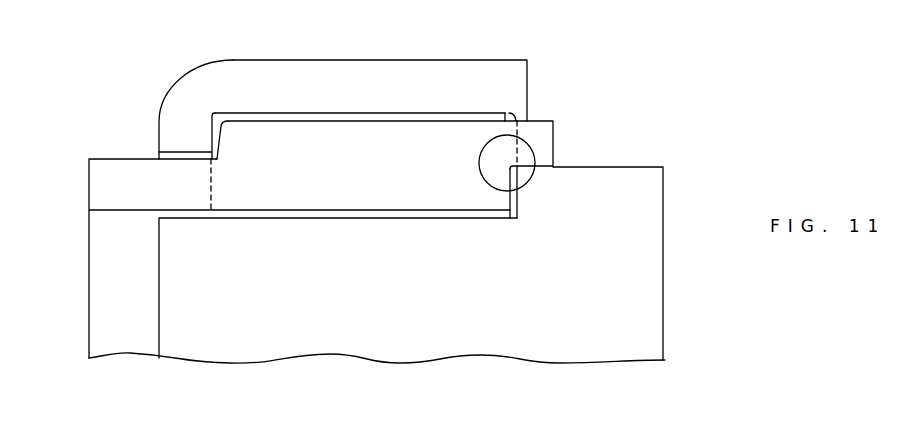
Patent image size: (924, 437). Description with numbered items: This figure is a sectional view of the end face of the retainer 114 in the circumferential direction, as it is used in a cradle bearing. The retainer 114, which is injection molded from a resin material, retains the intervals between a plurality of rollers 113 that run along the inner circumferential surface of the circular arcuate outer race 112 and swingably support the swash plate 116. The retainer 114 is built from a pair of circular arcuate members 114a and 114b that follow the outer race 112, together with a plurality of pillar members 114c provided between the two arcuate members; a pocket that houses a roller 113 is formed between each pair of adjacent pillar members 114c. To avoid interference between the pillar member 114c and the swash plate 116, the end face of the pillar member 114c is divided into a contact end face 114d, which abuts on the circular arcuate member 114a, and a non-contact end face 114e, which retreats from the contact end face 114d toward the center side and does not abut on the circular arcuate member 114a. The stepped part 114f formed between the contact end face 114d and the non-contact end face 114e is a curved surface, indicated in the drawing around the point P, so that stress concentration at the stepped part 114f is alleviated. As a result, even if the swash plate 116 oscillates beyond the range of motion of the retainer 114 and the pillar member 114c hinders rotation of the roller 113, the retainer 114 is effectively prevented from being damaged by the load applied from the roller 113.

The circular arcuate outer race 112 is at (443, 78).
The roller 113 is at (380, 118).
The retainer 114 is at (111, 143).
The circular arcuate member 114a is at (542, 151).
The circular arcuate member 114b is at (118, 185).
The pillar member 114c is at (306, 145).
The contact end face 114d is at (515, 136).
The non-contact end face 114e is at (515, 216).
The stepped part 114f is at (531, 185).
The swash plate 116 is at (637, 292).
The point P is at (480, 165).